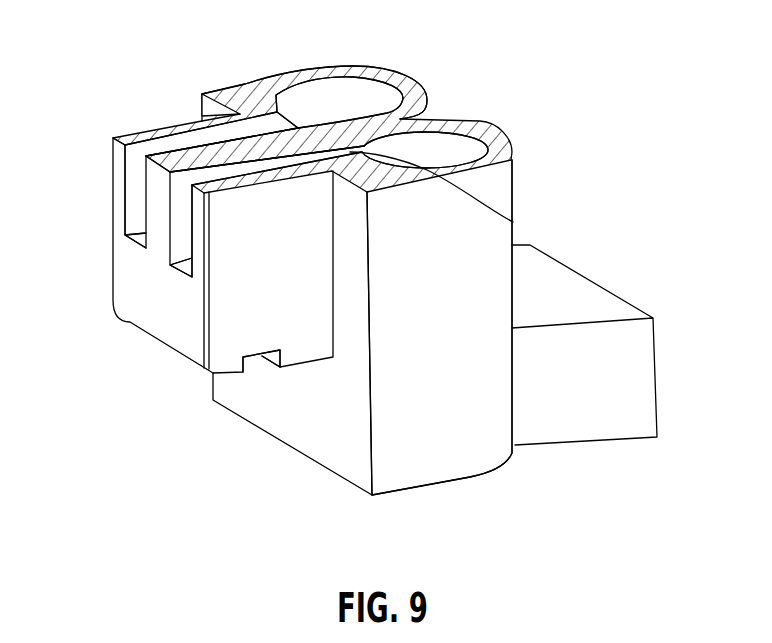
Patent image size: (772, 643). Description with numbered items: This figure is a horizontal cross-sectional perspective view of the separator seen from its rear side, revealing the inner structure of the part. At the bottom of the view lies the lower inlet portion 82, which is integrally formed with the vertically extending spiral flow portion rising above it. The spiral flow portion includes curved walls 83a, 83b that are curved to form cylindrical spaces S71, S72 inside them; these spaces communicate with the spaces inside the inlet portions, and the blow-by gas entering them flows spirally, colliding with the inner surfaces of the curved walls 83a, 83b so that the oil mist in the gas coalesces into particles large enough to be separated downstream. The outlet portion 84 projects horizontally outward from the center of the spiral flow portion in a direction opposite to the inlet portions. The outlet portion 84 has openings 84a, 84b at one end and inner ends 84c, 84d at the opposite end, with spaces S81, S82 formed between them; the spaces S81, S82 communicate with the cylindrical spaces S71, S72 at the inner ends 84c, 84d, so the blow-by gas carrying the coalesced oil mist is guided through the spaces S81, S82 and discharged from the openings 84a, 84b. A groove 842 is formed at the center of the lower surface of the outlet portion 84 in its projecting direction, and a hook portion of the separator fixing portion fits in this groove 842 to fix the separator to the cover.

The inlet portion 82 is at (644, 372).
The curved wall 83a is at (428, 303).
The curved wall 83b is at (229, 93).
The outlet portion 84 is at (125, 302).
The opening 84a is at (182, 255).
The opening 84b is at (130, 222).
The inner end 84c is at (295, 125).
The inner end 84d is at (513, 222).
The groove 842 is at (268, 357).
The cylindrical space S71 is at (468, 147).
The cylindrical space S72 is at (343, 88).
The space S81 is at (297, 160).
The space S82 is at (155, 147).